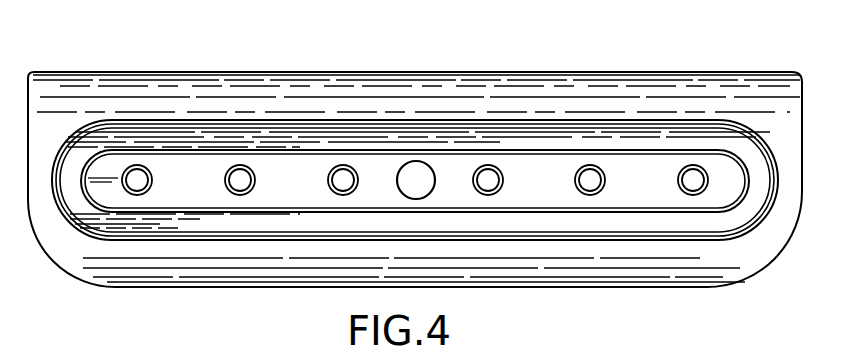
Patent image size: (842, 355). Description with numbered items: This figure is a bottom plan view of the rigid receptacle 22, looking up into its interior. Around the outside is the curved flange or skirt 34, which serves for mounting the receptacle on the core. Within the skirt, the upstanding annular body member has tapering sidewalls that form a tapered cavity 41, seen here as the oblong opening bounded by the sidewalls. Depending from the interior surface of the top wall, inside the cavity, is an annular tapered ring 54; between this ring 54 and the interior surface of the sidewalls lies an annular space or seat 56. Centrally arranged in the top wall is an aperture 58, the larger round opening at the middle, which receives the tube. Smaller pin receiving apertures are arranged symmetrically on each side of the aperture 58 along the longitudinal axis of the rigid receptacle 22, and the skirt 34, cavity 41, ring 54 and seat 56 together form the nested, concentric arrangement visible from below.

The rigid receptacle 22 is at (100, 63).
The curved flange or skirt 34 is at (771, 242).
The tapered cavity 41 is at (750, 151).
The annular tapered ring 54 is at (643, 153).
The annular space or seat 56 is at (190, 136).
The aperture 58 is at (416, 162).